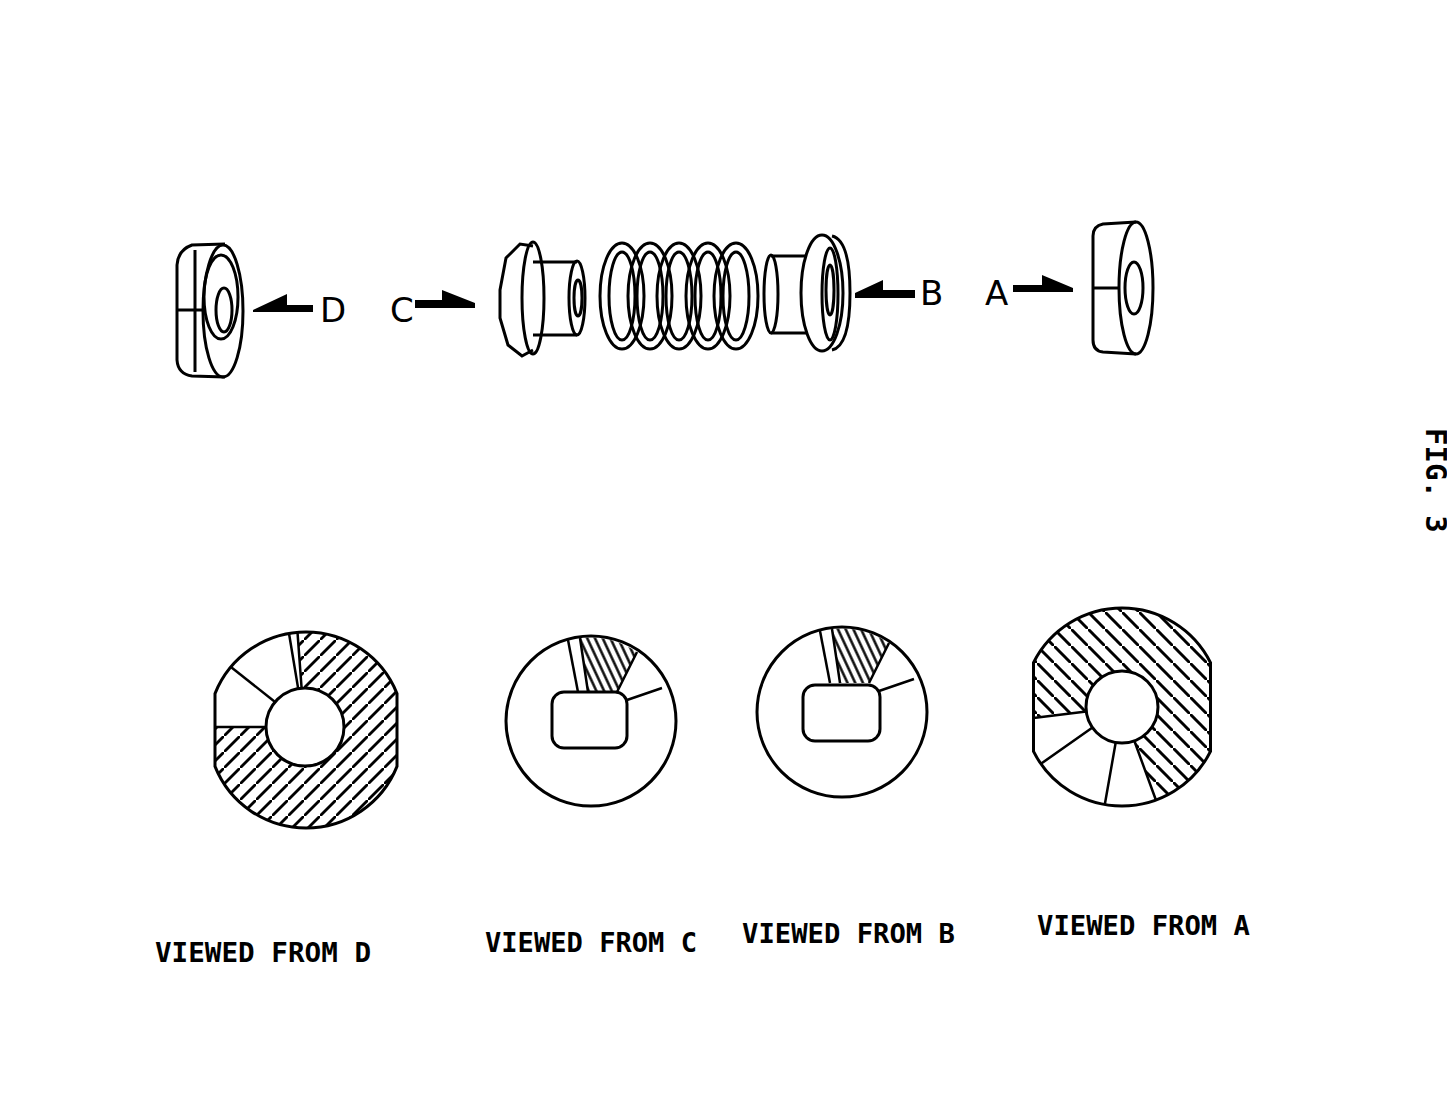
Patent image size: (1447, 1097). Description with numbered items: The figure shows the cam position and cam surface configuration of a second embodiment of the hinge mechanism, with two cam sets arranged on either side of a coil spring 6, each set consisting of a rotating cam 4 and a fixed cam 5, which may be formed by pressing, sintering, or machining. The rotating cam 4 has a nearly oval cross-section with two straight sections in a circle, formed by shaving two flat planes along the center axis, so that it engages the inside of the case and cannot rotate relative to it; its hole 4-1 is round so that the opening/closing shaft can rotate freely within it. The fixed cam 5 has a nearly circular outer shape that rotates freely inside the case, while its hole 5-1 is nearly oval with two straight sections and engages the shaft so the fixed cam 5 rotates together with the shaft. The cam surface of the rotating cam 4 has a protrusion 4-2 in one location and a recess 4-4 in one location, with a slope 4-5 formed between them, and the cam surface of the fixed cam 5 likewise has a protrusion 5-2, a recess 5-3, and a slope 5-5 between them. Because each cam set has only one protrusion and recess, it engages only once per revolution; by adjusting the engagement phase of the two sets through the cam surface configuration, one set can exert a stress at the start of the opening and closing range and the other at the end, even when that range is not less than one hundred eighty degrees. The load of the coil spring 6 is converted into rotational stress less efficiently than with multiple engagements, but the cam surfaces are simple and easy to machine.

The rotating cam 4 is at (230, 380).
The hole 4-1 is at (234, 272).
The protrusion 4-2 is at (357, 683).
The recess 4-4 is at (297, 672).
The slope 4-5 is at (290, 676).
The fixed cam 5 is at (547, 360).
The hole 5-1 is at (797, 258).
The protrusion 5-2 is at (715, 588).
The recess 5-3 is at (591, 772).
The slope 5-5 is at (602, 658).
The coil spring 6 is at (660, 333).